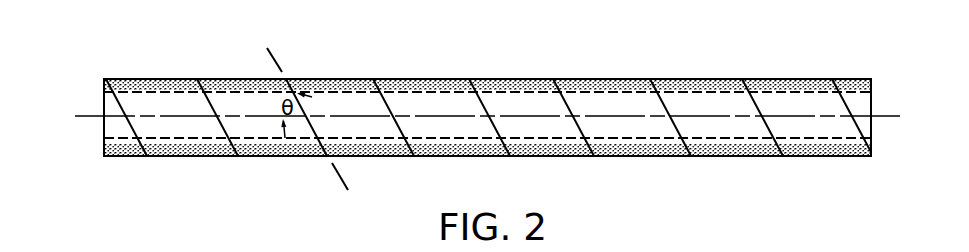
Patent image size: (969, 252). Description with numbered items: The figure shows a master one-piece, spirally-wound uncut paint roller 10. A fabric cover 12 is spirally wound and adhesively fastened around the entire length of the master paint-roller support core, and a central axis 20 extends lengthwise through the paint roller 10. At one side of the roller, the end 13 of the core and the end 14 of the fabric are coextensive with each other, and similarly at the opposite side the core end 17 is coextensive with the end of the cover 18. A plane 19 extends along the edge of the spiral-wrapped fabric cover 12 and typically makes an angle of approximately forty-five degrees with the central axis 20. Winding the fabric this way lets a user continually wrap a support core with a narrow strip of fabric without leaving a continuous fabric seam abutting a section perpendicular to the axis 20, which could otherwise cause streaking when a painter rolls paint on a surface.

The paint roller 10 is at (434, 76).
The cover 12 is at (473, 88).
The end of core 13 is at (104, 141).
The end of fabric 14 is at (104, 155).
The core end 17 is at (873, 143).
The end of cover 18 is at (875, 151).
The plane 19 is at (334, 180).
The central axis 20 is at (90, 115).